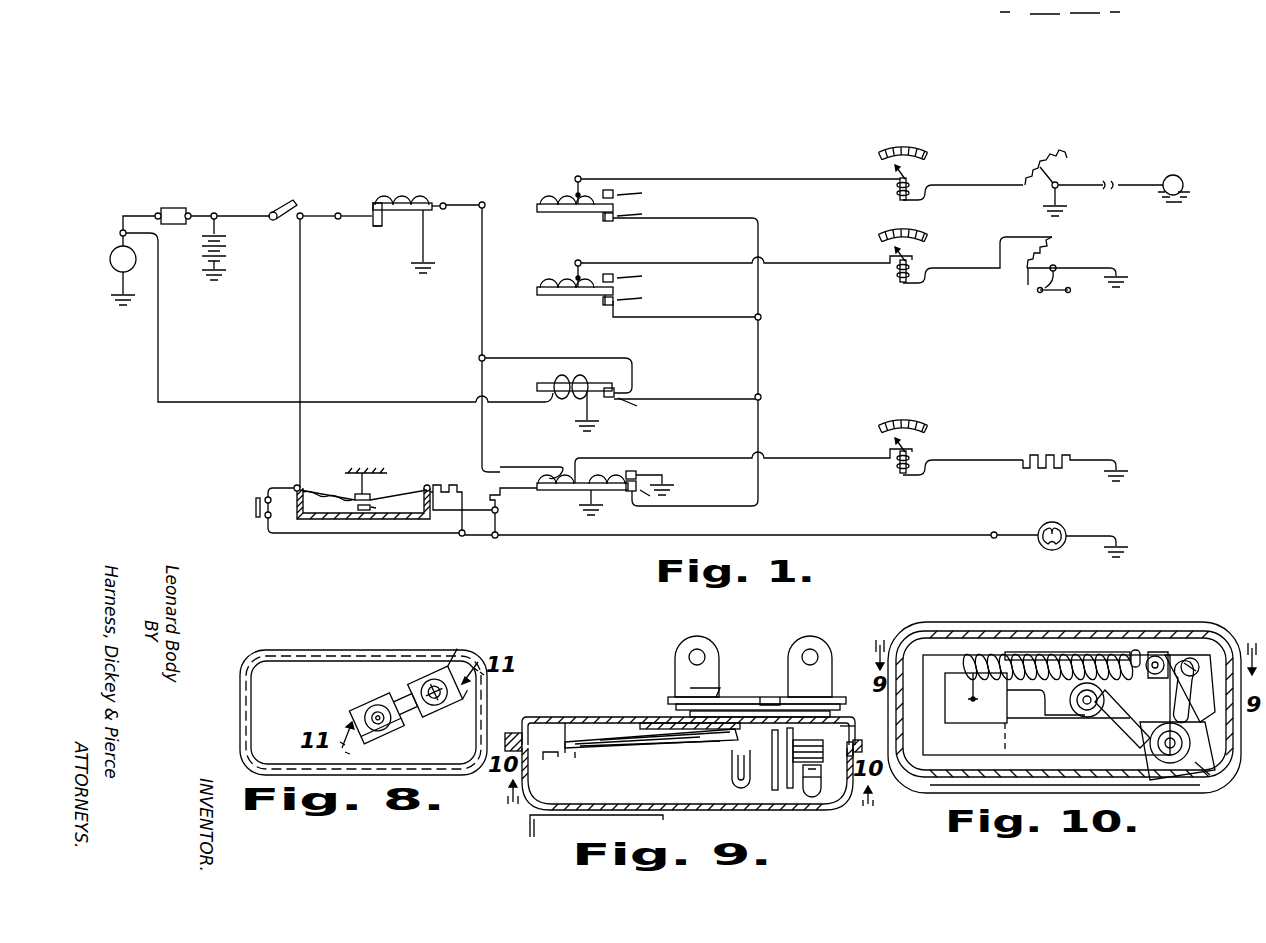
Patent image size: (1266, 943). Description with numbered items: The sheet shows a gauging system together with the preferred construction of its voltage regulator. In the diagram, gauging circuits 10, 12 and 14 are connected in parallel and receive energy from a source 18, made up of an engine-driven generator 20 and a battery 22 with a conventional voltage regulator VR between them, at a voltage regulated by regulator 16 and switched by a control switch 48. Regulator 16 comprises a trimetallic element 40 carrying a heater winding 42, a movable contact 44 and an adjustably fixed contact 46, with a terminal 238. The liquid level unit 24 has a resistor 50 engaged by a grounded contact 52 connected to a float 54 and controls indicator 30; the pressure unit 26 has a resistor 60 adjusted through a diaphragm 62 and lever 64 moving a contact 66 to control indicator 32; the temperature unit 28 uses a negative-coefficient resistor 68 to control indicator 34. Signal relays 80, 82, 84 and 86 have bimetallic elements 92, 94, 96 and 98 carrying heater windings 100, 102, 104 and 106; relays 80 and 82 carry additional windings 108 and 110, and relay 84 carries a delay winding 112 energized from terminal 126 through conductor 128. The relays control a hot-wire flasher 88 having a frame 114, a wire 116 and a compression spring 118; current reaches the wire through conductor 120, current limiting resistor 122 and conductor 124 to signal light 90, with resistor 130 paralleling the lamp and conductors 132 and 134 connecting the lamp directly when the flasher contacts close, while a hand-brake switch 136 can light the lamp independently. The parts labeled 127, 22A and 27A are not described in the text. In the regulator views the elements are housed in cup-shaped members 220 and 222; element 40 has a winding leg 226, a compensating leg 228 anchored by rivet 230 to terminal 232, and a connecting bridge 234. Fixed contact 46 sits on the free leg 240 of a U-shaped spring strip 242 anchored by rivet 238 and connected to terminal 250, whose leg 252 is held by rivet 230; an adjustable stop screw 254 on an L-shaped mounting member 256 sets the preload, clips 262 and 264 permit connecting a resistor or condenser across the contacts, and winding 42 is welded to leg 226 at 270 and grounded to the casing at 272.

In FIG. 1, the gauging circuit 10 is at (838, 200).
In FIG. 1, the gauging circuit 12 is at (838, 286).
In FIG. 1, the gauging circuit 14 is at (838, 481).
In FIG. 1, the regulator 16 is at (406, 213).
In FIG. 8, the regulator 16 is at (380, 656).
In FIG. 9, the regulator 16 is at (675, 753).
In FIG. 10, the regulator 16 is at (1064, 688).
In FIG. 1, the source 18 is at (180, 275).
In FIG. 1, the generator 20 is at (114, 268).
In FIG. 1, the battery 22 is at (226, 253).
In FIG. 1, the liquid level unit 24 is at (1026, 160).
In FIG. 1, the rheostatic unit 26 is at (1068, 250).
In FIG. 1, the rheostatic unit 28 is at (1030, 447).
In FIG. 1, the indicator 30 is at (930, 180).
In FIG. 1, the indicator 32 is at (930, 262).
In FIG. 1, the indicator 34 is at (930, 453).
In FIG. 1, the trimetallic element 40 is at (412, 212).
In FIG. 9, the trimetallic element 40 is at (549, 762).
In FIG. 10, the trimetallic element 40 is at (955, 727).
In FIG. 1, the heater winding 42 is at (433, 201).
In FIG. 9, the heater winding 42 is at (585, 748).
In FIG. 10, the heater winding 42 is at (1035, 650).
In FIG. 1, the movable contact 44 is at (372, 214).
In FIG. 9, the movable contact 44 is at (788, 760).
In FIG. 10, the movable contact 44 is at (1163, 652).
In FIG. 1, the fixed contact 46 is at (375, 228).
In FIG. 9, the fixed contact 46 is at (788, 735).
In FIG. 1, the control switch 48 is at (292, 202).
In FIG. 1, the resistor 50 is at (1055, 163).
In FIG. 1, the contact 52 is at (1045, 178).
In FIG. 1, the float 54 is at (1180, 178).
In FIG. 1, the resistor 60 is at (1045, 248).
In FIG. 1, the diaphragm 62 is at (1050, 294).
In FIG. 1, the lever 64 is at (1058, 276).
In FIG. 1, the contact 66 is at (1027, 286).
In FIG. 1, the resistor 68 is at (1062, 458).
In FIG. 1, the signal relay 80 is at (589, 198).
In FIG. 1, the signal relay 82 is at (627, 283).
In FIG. 1, the signal relay 84 is at (706, 478).
In FIG. 1, the signal relay 86 is at (615, 391).
In FIG. 1, the flasher 88 is at (355, 515).
In FIG. 1, the signal light 90 is at (1066, 530).
In FIG. 1, the bimetallic element 92 is at (546, 212).
In FIG. 1, the bimetallic element 94 is at (560, 296).
In FIG. 1, the bimetallic element 96 is at (541, 491).
In FIG. 1, the bimetallic element 98 is at (537, 384).
In FIG. 1, the heater winding 100 is at (582, 177).
In FIG. 1, the heater winding 102 is at (545, 283).
In FIG. 1, the heater winding 104 is at (555, 475).
In FIG. 1, the heater winding 106 is at (566, 378).
In FIG. 1, the additional winding 108 is at (578, 212).
In FIG. 1, the additional winding 110 is at (578, 296).
In FIG. 1, the second winding 112 is at (613, 495).
In FIG. 1, the frame 114 is at (398, 520).
In FIG. 1, the wire 116 is at (395, 486).
In FIG. 1, the compression spring 118 is at (345, 474).
In FIG. 1, the conductor 120 is at (302, 360).
In FIG. 1, the current limiting resistor 122 is at (453, 483).
In FIG. 1, the conductor 124 is at (505, 540).
In FIG. 1, the terminal 126 is at (482, 203).
In FIG. 1, the conductor 127 is at (484, 326).
In FIG. 1, the conductor 128 is at (760, 366).
In FIG. 1, the resistor 130 is at (513, 506).
In FIG. 1, the conductor 132 is at (327, 502).
In FIG. 1, the conductor 134 is at (460, 515).
In FIG. 1, the switch 136 is at (255, 511).
In FIG. 9, the upper cup-shaped member 220 is at (545, 717).
In FIG. 9, the lower cup-shaped member 222 is at (590, 810).
In FIG. 10, the leg 226 is at (958, 657).
In FIG. 10, the compensating leg 228 is at (970, 755).
In FIG. 8, the headed rivet 230 is at (453, 662).
In FIG. 9, the headed rivet 230 is at (780, 695).
In FIG. 10, the headed rivet 230 is at (1172, 752).
In FIG. 8, the terminal 232 is at (421, 745).
In FIG. 9, the terminal 232 is at (815, 640).
In FIG. 9, the connecting bridge 234 is at (852, 724).
In FIG. 1, the rivet 238 is at (446, 212).
In FIG. 8, the rivet 238 is at (390, 688).
In FIG. 9, the rivet 238 is at (722, 688).
In FIG. 10, the rivet 238 is at (1087, 706).
In FIG. 9, the free leg 240 is at (724, 750).
In FIG. 10, the free leg 240 is at (1155, 656).
In FIG. 9, the spring strip 242 is at (656, 723).
In FIG. 10, the spring strip 242 is at (1038, 720).
In FIG. 1, the terminal 250 is at (338, 222).
In FIG. 8, the terminal 250 is at (336, 714).
In FIG. 9, the terminal 250 is at (703, 640).
In FIG. 9, the leg 252 is at (834, 716).
In FIG. 9, the adjustable stop 254 is at (808, 785).
In FIG. 10, the adjustable stop 254 is at (1200, 658).
In FIG. 9, the L-shaped mounting member 256 is at (818, 736).
In FIG. 10, the L-shaped mounting member 256 is at (1132, 720).
In FIG. 10, the resistor mounting clip 262 is at (1210, 775).
In FIG. 10, the companion clip 264 is at (1155, 701).
In FIG. 10, the connection point 270 is at (1134, 650).
In FIG. 9, the ground connection 272 is at (568, 740).
In FIG. 10, the ground connection 272 is at (1008, 697).
In FIG. 9, the flange 22A is at (515, 733).
In FIG. 9, the bracket 27A is at (528, 825).
In FIG. 1, the voltage regulator VR is at (180, 208).